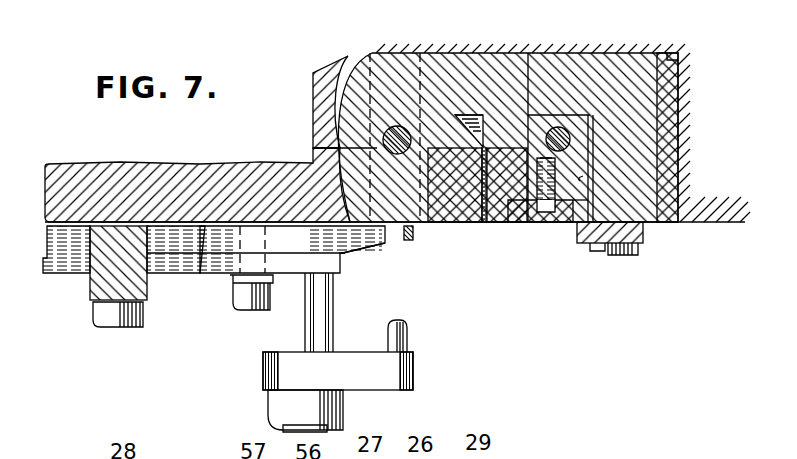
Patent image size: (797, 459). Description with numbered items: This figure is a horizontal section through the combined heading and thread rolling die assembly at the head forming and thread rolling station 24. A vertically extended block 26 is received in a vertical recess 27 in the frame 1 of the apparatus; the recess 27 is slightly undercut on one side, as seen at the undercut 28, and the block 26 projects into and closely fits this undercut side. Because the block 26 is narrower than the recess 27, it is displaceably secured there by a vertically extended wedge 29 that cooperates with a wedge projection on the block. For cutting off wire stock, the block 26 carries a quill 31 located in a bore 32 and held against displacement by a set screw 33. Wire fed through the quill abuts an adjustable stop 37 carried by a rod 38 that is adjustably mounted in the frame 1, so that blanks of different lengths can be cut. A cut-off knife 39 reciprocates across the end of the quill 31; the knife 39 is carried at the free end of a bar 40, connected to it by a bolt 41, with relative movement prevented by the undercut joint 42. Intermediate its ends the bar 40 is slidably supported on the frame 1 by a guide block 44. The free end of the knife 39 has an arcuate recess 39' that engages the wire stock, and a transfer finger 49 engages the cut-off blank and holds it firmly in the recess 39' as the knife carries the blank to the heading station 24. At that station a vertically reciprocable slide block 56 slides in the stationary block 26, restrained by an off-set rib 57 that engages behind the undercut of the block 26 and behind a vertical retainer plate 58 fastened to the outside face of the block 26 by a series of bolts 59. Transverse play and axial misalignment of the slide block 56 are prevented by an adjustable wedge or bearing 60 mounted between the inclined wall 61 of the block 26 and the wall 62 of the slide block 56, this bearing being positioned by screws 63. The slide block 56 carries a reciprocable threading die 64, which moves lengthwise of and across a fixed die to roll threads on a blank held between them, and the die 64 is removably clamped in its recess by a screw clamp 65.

The frame 1 is at (692, 222).
The combined head forming and thread rolling station 24 is at (487, 233).
The block 26 is at (637, 53).
The vertical recess 27 is at (560, 53).
The undercut 28 is at (341, 68).
The wedge 29 is at (685, 53).
The quill 31 is at (413, 46).
The bore 32 is at (461, 46).
The set screw 33 is at (318, 148).
The adjustable stop 37 is at (395, 334).
The rod 38 is at (333, 305).
The cut-off knife 39 is at (292, 264).
The arcuate recess 39' is at (388, 263).
The bar 40 is at (158, 273).
The bolt 41 is at (236, 300).
The undercut joint 42 is at (196, 268).
The guide block 44 is at (93, 295).
The transfer finger 49 is at (413, 233).
The slide block 56 is at (530, 53).
The off-set rib 57 is at (473, 114).
The vertical retainer plate 58 is at (645, 237).
The bolts 59 is at (636, 253).
The adjustable wedge or bearing 60 is at (598, 168).
The inclined wall 61 is at (600, 153).
The wall 62 is at (587, 180).
The screws 63 is at (598, 251).
The reciprocable threading die 64 is at (507, 222).
The screw clamp 65 is at (565, 222).